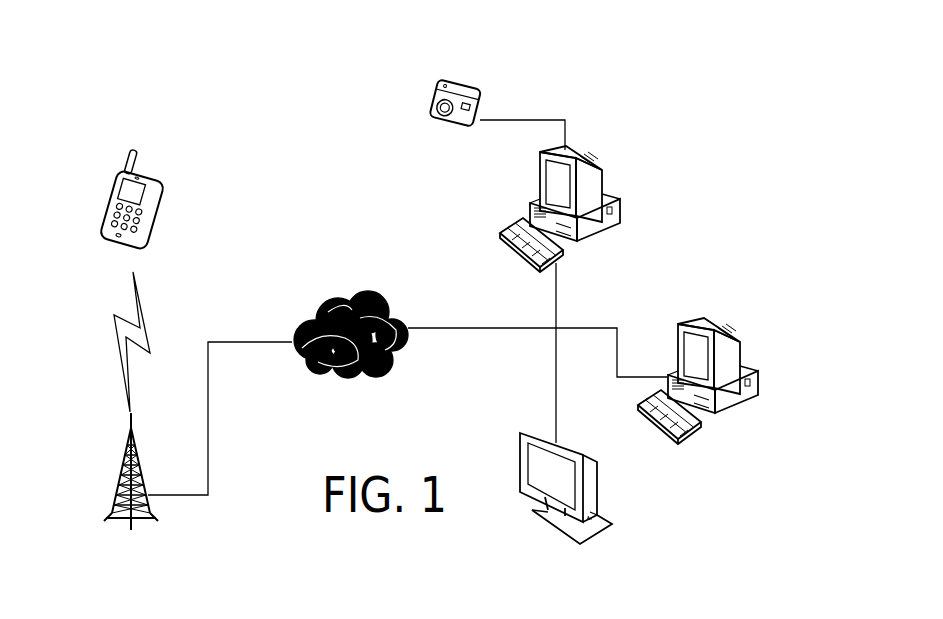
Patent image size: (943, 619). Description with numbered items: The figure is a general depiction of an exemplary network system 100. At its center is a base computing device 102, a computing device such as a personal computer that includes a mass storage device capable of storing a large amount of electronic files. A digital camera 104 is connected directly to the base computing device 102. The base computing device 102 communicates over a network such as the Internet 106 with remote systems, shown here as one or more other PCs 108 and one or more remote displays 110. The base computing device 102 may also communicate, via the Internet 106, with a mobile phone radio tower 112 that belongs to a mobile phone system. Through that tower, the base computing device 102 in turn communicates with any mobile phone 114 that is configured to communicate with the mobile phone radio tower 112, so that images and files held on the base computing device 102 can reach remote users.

The network system 100 is at (694, 64).
The base computing device 102 is at (593, 157).
The digital camera 104 is at (455, 80).
The Internet 106 is at (340, 302).
The other PCs 108 is at (720, 322).
The remote display 110 is at (610, 525).
The mobile phone radio tower 112 is at (113, 452).
The mobile phone 114 is at (138, 170).